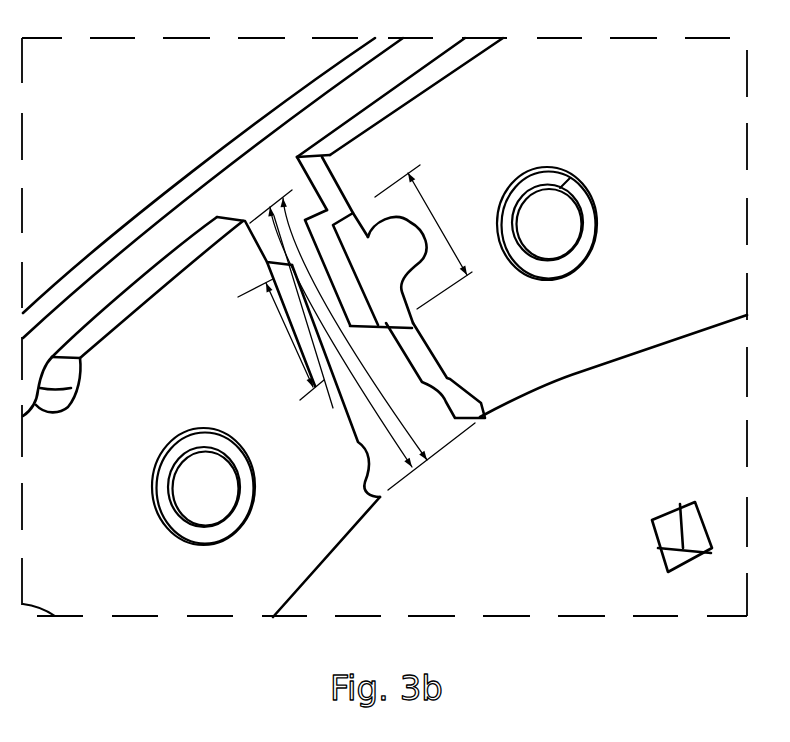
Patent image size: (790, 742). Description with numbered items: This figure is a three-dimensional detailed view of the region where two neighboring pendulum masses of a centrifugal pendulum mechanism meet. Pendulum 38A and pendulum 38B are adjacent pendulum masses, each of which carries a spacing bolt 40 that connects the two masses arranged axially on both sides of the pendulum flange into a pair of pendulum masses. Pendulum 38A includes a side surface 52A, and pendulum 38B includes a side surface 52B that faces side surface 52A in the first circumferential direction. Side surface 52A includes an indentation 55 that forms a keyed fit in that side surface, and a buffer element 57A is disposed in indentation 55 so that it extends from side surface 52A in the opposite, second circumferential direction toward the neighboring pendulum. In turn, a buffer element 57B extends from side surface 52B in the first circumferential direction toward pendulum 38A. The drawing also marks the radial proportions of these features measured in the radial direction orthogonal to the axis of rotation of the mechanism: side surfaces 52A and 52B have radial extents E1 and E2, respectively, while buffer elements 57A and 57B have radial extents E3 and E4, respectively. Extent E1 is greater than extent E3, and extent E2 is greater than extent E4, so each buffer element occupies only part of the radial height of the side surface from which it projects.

The pendulum 38A is at (573, 113).
The pendulum 38B is at (162, 401).
The spacing bolt 40 is at (557, 228).
The indentation 55 is at (383, 237).
The side surface 52A is at (452, 375).
The side surface 52B is at (357, 443).
The buffer element 57A is at (408, 292).
The buffer element 57B is at (288, 273).
The extent E1 is at (363, 340).
The extent E2 is at (373, 398).
The extent E3 is at (437, 226).
The extent E4 is at (300, 360).